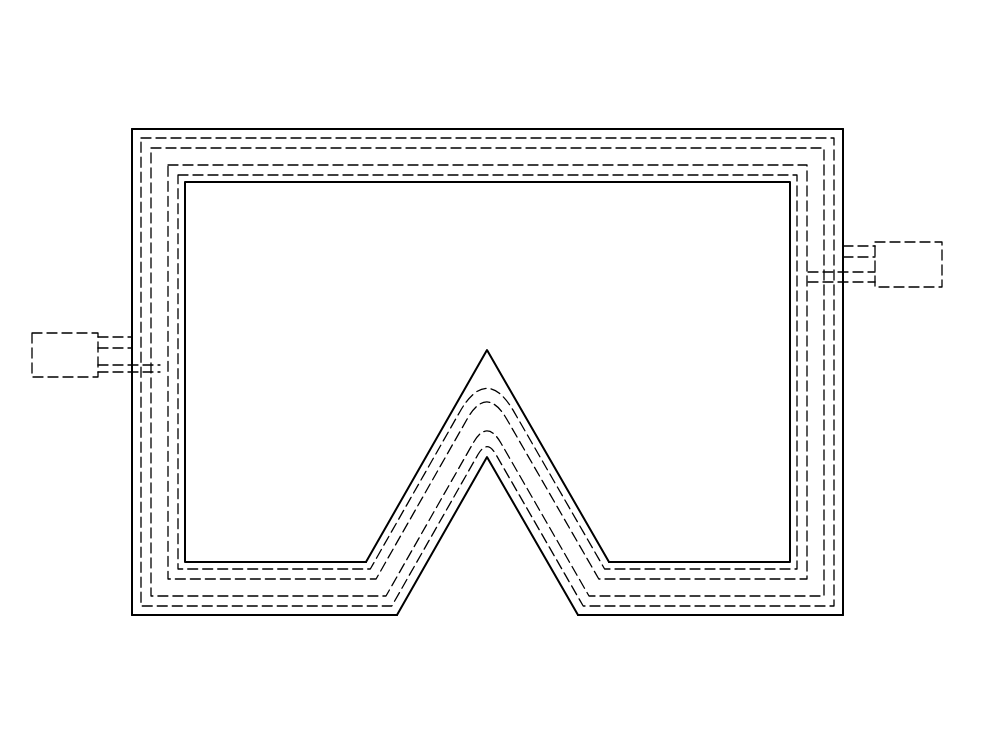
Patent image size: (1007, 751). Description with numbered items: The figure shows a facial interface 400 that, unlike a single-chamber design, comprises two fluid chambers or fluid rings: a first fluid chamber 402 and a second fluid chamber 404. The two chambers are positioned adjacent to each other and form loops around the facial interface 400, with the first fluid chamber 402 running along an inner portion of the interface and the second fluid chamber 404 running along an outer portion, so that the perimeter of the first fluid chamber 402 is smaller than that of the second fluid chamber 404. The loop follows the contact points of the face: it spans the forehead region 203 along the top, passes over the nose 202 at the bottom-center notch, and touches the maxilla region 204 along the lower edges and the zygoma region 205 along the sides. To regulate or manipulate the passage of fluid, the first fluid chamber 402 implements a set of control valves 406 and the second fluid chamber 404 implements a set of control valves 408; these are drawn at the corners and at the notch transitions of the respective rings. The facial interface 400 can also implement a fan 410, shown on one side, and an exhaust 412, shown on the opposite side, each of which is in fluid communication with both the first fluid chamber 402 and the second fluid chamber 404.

The facial interface 400 is at (256, 101).
The forehead region 203 is at (470, 70).
The nose 202 is at (554, 423).
The maxilla region 204 is at (724, 639).
The zygoma region 205 is at (852, 344).
The first fluid chamber 402 is at (521, 172).
The second fluid chamber 404 is at (598, 148).
The control valves 406 is at (800, 172).
The control valves 408 is at (829, 143).
The fan 410 is at (908, 242).
The exhaust 412 is at (63, 334).